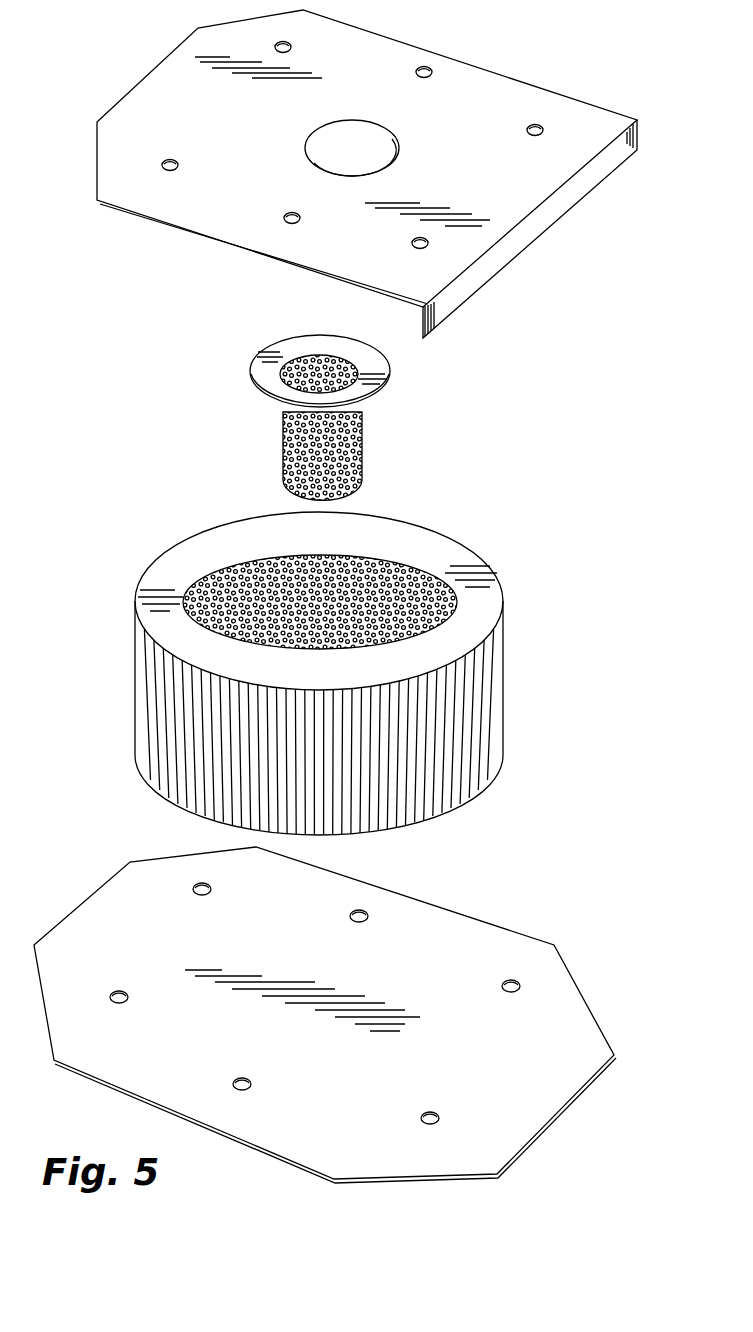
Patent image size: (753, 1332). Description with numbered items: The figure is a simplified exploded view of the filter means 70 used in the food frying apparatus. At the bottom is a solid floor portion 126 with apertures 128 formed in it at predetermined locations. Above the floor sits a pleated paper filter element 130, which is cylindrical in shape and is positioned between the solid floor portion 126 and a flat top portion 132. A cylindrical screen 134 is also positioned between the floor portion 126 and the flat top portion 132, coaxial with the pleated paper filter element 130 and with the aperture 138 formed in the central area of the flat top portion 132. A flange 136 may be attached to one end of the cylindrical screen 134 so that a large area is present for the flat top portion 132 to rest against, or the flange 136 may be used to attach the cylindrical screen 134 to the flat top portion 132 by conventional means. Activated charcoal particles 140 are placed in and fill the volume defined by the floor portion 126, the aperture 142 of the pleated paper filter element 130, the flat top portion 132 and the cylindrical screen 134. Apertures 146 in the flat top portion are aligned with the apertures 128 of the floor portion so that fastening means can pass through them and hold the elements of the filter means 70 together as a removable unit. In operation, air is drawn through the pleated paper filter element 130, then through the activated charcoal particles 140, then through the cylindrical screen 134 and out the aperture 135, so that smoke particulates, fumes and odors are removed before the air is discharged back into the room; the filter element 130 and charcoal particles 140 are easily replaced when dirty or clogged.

The filter means 70 is at (496, 451).
The solid floor portion 126 is at (578, 1024).
The apertures 128 is at (204, 895).
The pleated paper filter element 130 is at (495, 703).
The flat top portion 132 is at (522, 90).
The cylindrical screen 134 is at (364, 443).
The aperture 135 is at (340, 358).
The flange 136 is at (388, 374).
The aperture 138 is at (385, 167).
The activated charcoal particles 140 is at (213, 590).
The aperture 142 is at (453, 605).
The apertures 146 is at (425, 78).